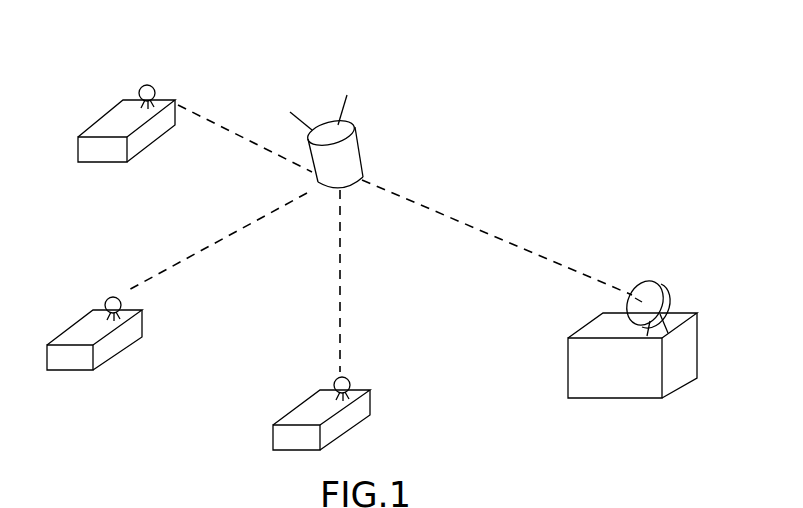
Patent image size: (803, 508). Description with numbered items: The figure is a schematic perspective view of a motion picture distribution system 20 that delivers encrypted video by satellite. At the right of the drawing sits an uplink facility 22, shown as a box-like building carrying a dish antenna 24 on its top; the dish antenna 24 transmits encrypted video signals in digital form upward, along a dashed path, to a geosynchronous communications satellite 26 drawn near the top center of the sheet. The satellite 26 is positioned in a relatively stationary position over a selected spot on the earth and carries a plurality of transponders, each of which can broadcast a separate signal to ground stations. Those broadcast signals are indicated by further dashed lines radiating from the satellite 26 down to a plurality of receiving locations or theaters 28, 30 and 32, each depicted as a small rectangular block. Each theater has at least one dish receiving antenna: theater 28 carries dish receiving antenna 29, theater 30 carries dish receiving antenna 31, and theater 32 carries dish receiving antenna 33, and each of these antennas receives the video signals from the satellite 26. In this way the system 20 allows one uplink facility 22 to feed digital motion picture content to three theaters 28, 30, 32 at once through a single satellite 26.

The motion picture distribution system 20 is at (528, 183).
The uplink facility 22 is at (605, 390).
The dish antenna 24 is at (660, 288).
The geosynchronous communications satellite 26 is at (361, 140).
The theater 28 is at (376, 409).
The dish receiving antenna 29 is at (349, 378).
The theater 30 is at (148, 333).
The dish receiving antenna 31 is at (110, 297).
The theater 32 is at (133, 165).
The dish receiving antenna 33 is at (152, 86).